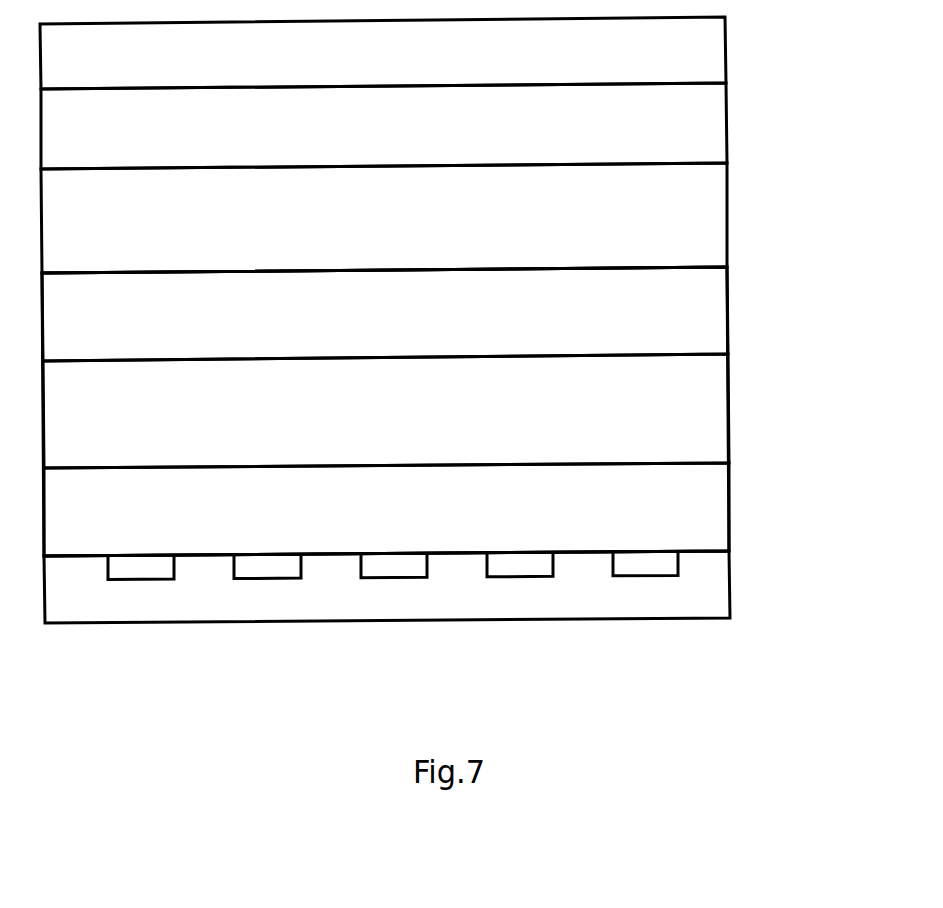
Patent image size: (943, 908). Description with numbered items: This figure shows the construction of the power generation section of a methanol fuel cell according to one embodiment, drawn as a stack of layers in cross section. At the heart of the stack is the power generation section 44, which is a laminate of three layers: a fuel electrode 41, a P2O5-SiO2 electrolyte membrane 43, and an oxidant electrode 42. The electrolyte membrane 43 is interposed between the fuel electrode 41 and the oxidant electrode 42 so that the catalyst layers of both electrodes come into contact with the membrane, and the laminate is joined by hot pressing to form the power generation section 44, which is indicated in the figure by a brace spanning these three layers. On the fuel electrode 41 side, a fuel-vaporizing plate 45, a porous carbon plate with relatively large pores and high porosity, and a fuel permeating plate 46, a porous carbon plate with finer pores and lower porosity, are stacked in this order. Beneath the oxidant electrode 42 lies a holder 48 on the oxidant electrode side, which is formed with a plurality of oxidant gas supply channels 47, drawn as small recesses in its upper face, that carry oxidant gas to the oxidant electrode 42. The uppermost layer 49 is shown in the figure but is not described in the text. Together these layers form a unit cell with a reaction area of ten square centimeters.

The upper layer 49 is at (698, 53).
The fuel permeating plate 46 is at (699, 124).
The fuel-vaporizing plate 45 is at (700, 218).
The power generation section 44 is at (813, 282).
The fuel electrode 41 is at (700, 316).
The electrolyte membrane 43 is at (701, 390).
The oxidant electrode 42 is at (702, 502).
The holder 48 is at (703, 584).
The oxidant gas supply channels 47 is at (540, 567).